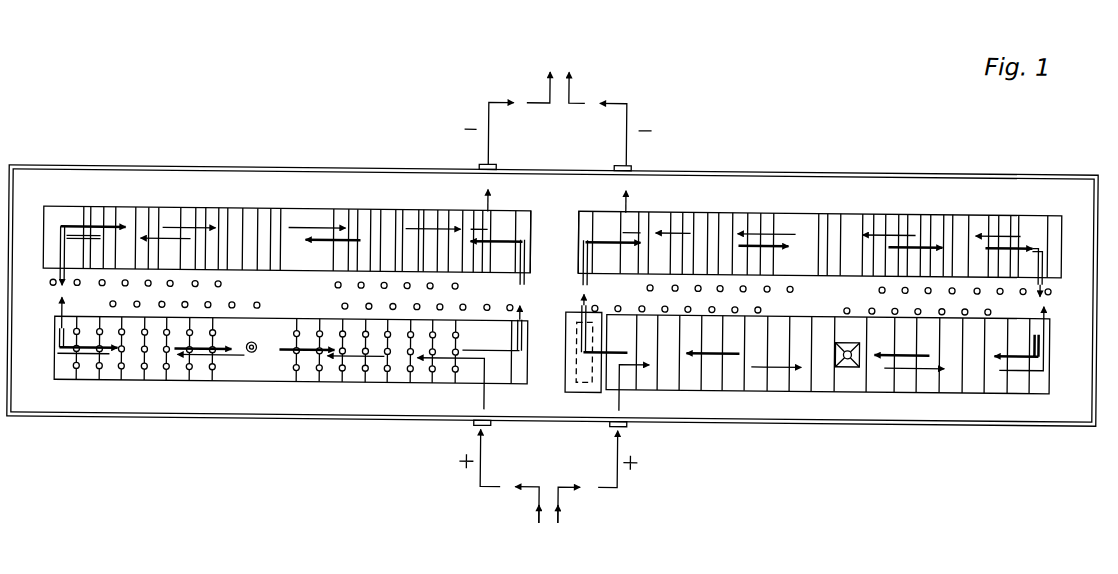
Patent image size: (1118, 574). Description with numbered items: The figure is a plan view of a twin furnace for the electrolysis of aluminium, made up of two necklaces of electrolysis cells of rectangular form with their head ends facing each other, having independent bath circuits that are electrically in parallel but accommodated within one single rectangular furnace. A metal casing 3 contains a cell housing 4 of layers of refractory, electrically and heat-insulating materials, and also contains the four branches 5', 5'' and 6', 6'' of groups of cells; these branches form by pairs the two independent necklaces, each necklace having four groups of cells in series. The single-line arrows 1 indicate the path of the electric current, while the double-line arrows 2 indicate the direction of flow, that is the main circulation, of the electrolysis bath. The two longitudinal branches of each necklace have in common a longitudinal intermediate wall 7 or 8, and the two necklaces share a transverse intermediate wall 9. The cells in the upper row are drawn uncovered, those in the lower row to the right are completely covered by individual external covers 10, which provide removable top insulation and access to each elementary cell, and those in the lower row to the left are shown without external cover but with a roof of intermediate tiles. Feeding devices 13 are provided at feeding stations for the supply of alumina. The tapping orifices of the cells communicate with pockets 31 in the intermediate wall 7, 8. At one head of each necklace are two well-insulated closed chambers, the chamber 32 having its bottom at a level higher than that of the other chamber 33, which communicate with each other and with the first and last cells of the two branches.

The single-line arrows 1 is at (486, 118).
The double-line arrows 2 is at (583, 304).
The metal casing 3 is at (202, 418).
The cell housing 4 is at (152, 409).
The branch 5' is at (290, 376).
The branch 5'' is at (287, 208).
The branch 6' is at (828, 379).
The branch 6'' is at (820, 216).
The longitudinal intermediate wall 7 is at (278, 292).
The longitudinal intermediate wall 8 is at (834, 293).
The transverse intermediate wall 9 is at (551, 296).
The external covers 10 is at (690, 390).
The feeding devices 13 is at (255, 345).
The pockets 31 is at (465, 304).
The chamber 32 is at (583, 227).
The chamber 33 is at (524, 377).